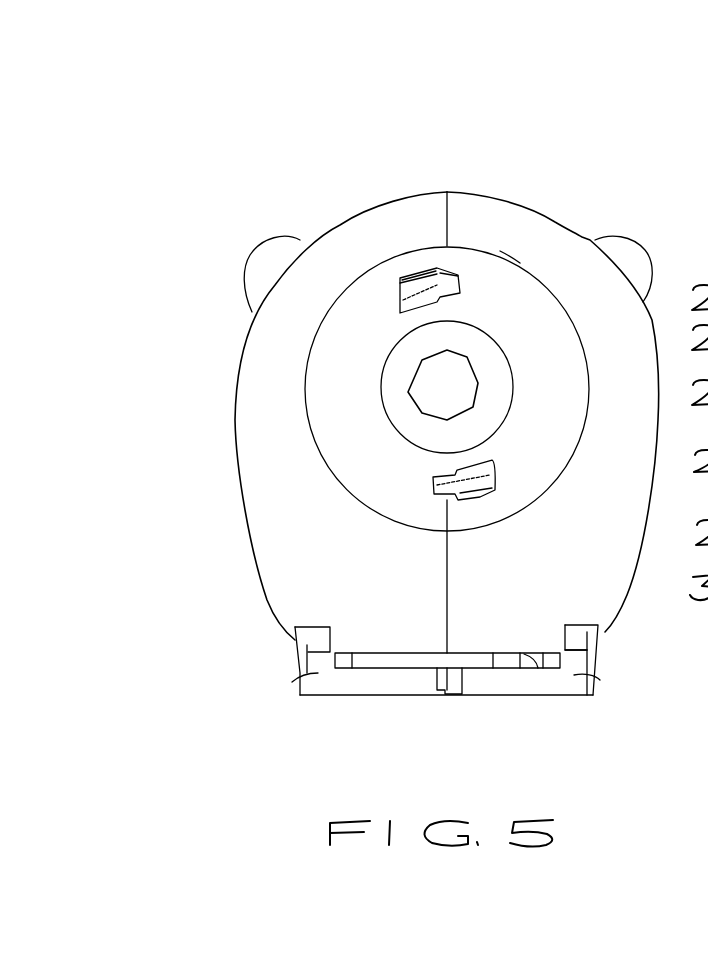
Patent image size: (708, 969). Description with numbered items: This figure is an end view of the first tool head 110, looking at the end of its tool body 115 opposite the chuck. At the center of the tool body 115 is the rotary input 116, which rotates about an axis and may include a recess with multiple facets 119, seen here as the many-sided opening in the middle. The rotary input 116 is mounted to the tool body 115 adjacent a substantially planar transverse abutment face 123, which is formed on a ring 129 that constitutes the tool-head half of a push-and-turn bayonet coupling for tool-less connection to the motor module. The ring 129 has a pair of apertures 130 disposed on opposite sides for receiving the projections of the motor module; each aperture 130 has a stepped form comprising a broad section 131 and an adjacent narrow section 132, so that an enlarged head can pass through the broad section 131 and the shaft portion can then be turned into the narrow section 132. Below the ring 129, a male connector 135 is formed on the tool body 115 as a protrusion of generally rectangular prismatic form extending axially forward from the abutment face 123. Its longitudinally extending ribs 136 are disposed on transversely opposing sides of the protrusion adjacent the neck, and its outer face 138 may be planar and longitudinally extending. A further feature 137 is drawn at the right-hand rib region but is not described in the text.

The first tool head 110 is at (340, 153).
The tool body 115 is at (265, 530).
The rotary input 116 is at (425, 387).
The facets 119 is at (450, 368).
The abutment face 123 is at (483, 278).
The ring 129 is at (327, 353).
The apertures 130 is at (158, 219).
The broad section 131 is at (420, 275).
The narrow section 132 is at (455, 275).
The male connector 135 is at (434, 698).
The ribs 136 is at (168, 710).
The post head 137 is at (577, 634).
The outer face 138 is at (390, 696).